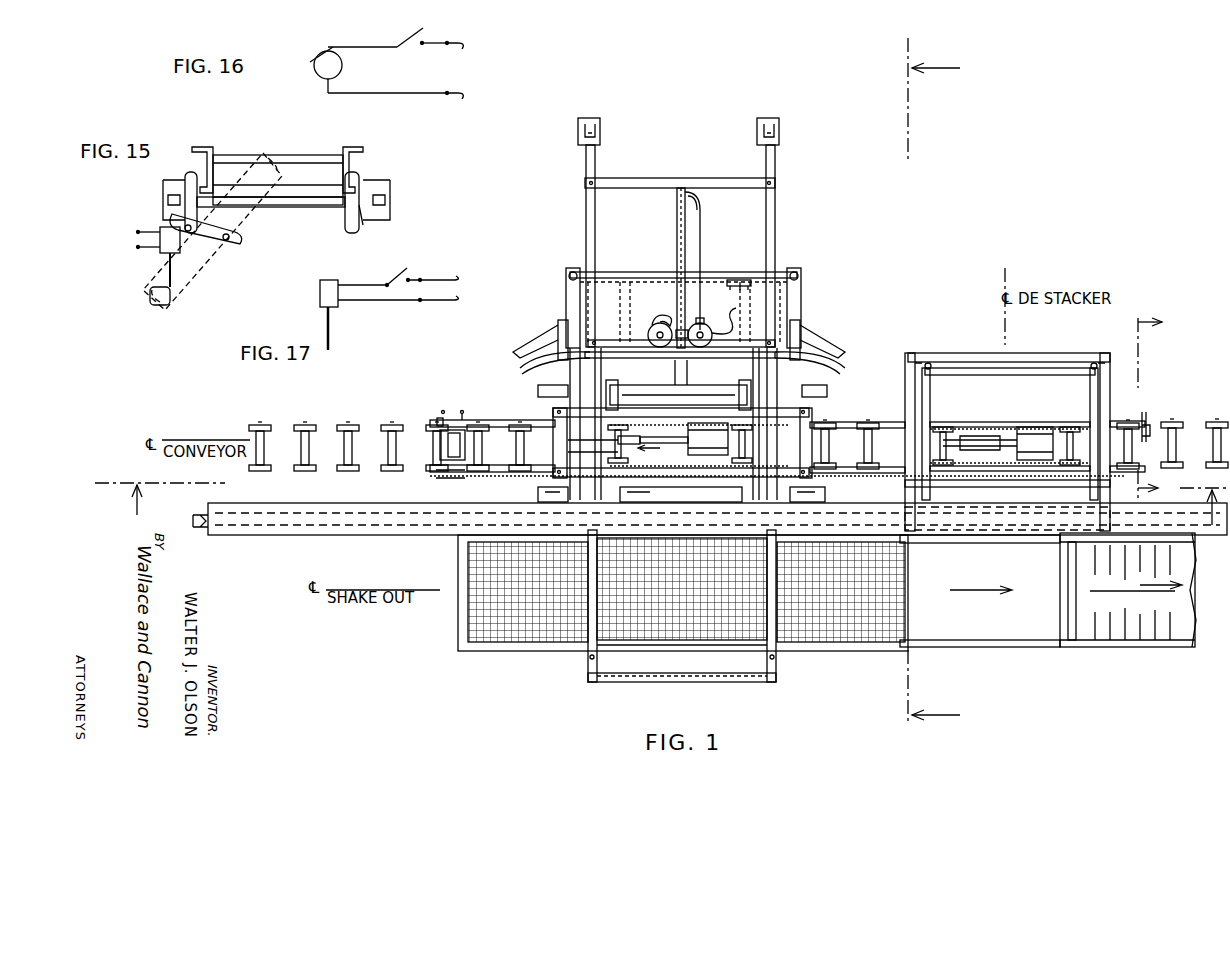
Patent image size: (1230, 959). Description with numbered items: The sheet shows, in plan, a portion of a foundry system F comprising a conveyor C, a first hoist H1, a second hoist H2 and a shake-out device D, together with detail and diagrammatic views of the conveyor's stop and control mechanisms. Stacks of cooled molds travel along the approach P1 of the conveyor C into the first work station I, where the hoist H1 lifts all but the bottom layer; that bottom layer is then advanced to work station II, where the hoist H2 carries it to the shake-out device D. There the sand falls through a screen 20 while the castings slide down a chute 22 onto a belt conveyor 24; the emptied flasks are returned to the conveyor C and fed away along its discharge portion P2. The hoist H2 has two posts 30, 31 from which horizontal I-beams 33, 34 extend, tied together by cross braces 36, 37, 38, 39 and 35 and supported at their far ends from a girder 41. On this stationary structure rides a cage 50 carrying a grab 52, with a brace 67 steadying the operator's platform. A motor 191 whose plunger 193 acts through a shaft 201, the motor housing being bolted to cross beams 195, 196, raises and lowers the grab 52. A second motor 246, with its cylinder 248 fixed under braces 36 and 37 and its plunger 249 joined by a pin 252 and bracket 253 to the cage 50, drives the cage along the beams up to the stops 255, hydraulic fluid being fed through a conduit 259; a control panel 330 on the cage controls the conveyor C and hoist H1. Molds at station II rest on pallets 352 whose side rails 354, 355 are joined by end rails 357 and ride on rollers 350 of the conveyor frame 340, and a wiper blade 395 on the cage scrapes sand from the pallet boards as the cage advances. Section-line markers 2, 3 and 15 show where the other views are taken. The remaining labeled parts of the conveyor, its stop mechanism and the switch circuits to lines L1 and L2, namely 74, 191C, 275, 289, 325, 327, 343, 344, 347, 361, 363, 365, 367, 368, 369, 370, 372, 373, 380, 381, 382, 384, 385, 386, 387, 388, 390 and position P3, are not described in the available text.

In FIG. 1, the screen 20 is at (840, 614).
In FIG. 1, the chute 22 is at (994, 628).
In FIG. 1, the belt conveyor 24 is at (1140, 630).
In FIG. 1, the post 30 is at (600, 128).
In FIG. 1, the post 31 is at (779, 128).
In FIG. 1, the I-beam 33 is at (586, 214).
In FIG. 1, the I-beam 34 is at (775, 214).
In FIG. 1, the cross brace 35 is at (730, 684).
In FIG. 1, the cross brace 36 is at (635, 182).
In FIG. 1, the cross brace 37 is at (735, 326).
In FIG. 1, the cross brace 38 is at (812, 410).
In FIG. 1, the cross brace 39 is at (812, 476).
In FIG. 1, the girder 41 is at (362, 534).
In FIG. 1, the cage 50 is at (624, 273).
In FIG. 1, the grab 52 is at (877, 385).
In FIG. 1, the brace 67 is at (800, 330).
In FIG. 1, the direction arrow 74 is at (636, 451).
In FIG. 1, the motor 191 is at (708, 439).
In FIG. 1, the drive motor 191C is at (1035, 432).
In FIG. 1, the plunger 193 is at (664, 433).
In FIG. 1, the cross beam 195 is at (686, 424).
In FIG. 1, the cross beam 196 is at (728, 420).
In FIG. 1, the shaft 201 is at (637, 433).
In FIG. 1, the motor 246 is at (676, 221).
In FIG. 1, the cylinder 248 is at (677, 240).
In FIG. 1, the plunger 249 is at (704, 358).
In FIG. 1, the pin 252 is at (672, 357).
In FIG. 1, the bracket 253 is at (712, 370).
In FIG. 1, the stop 255 is at (588, 658).
In FIG. 1, the conduit 259 is at (701, 257).
In FIG. 1, the pulley 275 is at (704, 324).
In FIG. 1, the pulley 289 is at (656, 325).
In FIG. 1, the destacker frame 325 is at (978, 344).
In FIG. 1, the drive shaft 327 is at (960, 420).
In FIG. 1, the control panel 330 is at (746, 275).
In FIG. 1, the conveyor frame 340 is at (480, 420).
In FIG. 15, the angle bracket 343 is at (178, 178).
In FIG. 15, the angle bracket 344 is at (385, 218).
In FIG. 15, the roller 347 is at (325, 200).
In FIG. 1, the roller 347 is at (540, 446).
In FIG. 15, the roller 350 is at (352, 225).
In FIG. 15, the pallet 352 is at (359, 148).
In FIG. 15, the side rail 354 is at (357, 155).
In FIG. 15, the side rail 355 is at (210, 150).
In FIG. 15, the end rail 357 is at (325, 170).
In FIG. 1, the lower rail 361 is at (533, 478).
In FIG. 1, the lower beam 363 is at (942, 482).
In FIG. 16, the limit switch 365 is at (318, 80).
In FIG. 1, the limit switch 365 is at (437, 438).
In FIG. 1, the switch bracket 367 is at (470, 478).
In FIG. 1, the switch actuator 368 is at (442, 450).
In FIG. 1, the bracket 369 is at (440, 476).
In FIG. 1, the roller 370 is at (490, 480).
In FIG. 16, the switch contact 372 is at (374, 46).
In FIG. 1, the switch contact 372 is at (442, 410).
In FIG. 16, the switch lead 373 is at (383, 96).
In FIG. 1, the switch lead 373 is at (463, 411).
In FIG. 15, the lever arm 380 is at (196, 262).
In FIG. 1, the lever arm 380 is at (1140, 442).
In FIG. 15, the link 381 is at (240, 226).
In FIG. 15, the pivot 382 is at (234, 242).
In FIG. 15, the switch body 384 is at (160, 248).
In FIG. 17, the switch body 384 is at (320, 296).
In FIG. 15, the switch plunger 385 is at (168, 274).
In FIG. 17, the switch plunger 385 is at (326, 326).
In FIG. 15, the arm end 386 is at (155, 302).
In FIG. 15, the lead wire 387 is at (125, 226).
In FIG. 17, the lead wire 387 is at (368, 285).
In FIG. 15, the lead wire 388 is at (128, 246).
In FIG. 17, the lead wire 388 is at (342, 303).
In FIG. 17, the switch blade 390 is at (402, 270).
In FIG. 1, the wiper blade 395 is at (830, 366).
In FIG. 1, the section line 2— 2 is at (662, 501).
In FIG. 1, the section line 3— 3 is at (934, 380).
In FIG. 1, the section line 15— 15 is at (1162, 405).
In FIG. 1, the conveyor C is at (1172, 410).
In FIG. 1, the shake-out device D is at (516, 662).
In FIG. 1, the foundry system F is at (1068, 278).
In FIG. 1, the first work station I is at (1028, 346).
In FIG. 1, the second work station II is at (719, 234).
In FIG. 1, the hoist H1 is at (1063, 352).
In FIG. 1, the hoist H2 is at (814, 335).
In FIG. 16, the power line L1 is at (460, 50).
In FIG. 17, the power line L1 is at (450, 282).
In FIG. 16, the power line L2 is at (466, 92).
In FIG. 17, the power line L2 is at (446, 300).
In FIG. 1, the approach portion P1 is at (1198, 412).
In FIG. 1, the discharge portion P2 is at (340, 412).
In FIG. 1, the pallet position P3 is at (515, 413).